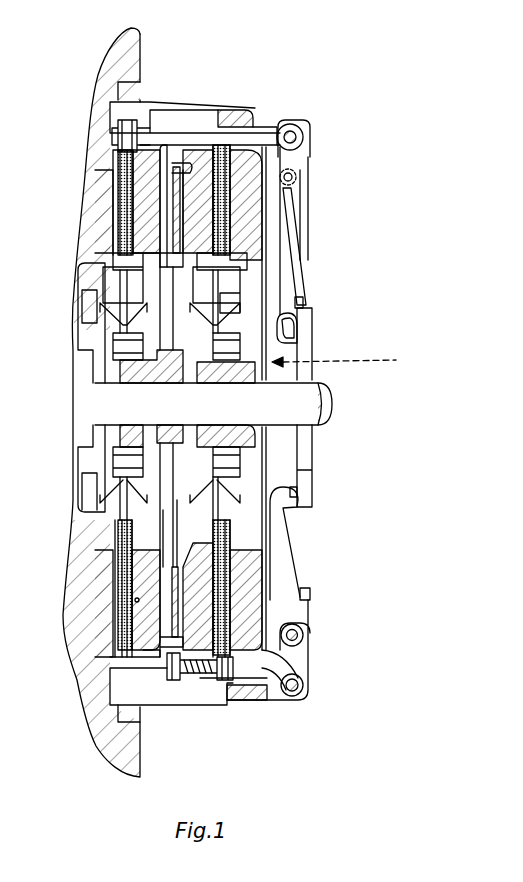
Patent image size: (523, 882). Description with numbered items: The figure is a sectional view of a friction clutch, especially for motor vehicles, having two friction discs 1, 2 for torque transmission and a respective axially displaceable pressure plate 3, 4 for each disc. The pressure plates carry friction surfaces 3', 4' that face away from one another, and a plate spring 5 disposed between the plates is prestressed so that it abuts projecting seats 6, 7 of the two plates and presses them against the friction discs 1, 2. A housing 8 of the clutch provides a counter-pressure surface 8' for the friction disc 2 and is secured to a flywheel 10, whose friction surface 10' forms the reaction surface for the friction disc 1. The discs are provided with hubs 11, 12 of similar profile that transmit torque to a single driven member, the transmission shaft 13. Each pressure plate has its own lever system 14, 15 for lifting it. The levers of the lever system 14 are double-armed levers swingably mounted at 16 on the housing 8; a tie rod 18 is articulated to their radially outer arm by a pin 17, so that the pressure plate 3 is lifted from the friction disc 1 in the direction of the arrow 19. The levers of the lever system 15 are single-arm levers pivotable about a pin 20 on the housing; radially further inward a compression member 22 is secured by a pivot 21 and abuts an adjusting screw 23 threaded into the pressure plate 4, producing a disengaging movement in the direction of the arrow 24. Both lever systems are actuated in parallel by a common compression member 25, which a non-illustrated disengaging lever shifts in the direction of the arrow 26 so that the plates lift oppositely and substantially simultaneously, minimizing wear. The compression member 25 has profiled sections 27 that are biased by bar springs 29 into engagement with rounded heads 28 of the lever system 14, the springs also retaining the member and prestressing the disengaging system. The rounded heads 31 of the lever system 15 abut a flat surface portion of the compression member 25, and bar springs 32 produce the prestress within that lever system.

The friction disc 1 is at (118, 196).
The friction disc 2 is at (230, 583).
The pressure plate 3 is at (112, 598).
The friction surface 3' is at (101, 600).
The pressure plate 4 is at (87, 588).
The friction surface 4' is at (213, 635).
The plate spring 5 is at (178, 170).
The projecting seat 6 is at (170, 173).
The projecting seat 7 is at (178, 237).
The housing 8 is at (233, 725).
The counter-pressure surface 8' is at (255, 171).
The flywheel 10 is at (101, 395).
The friction surface 10' is at (77, 211).
The hub 11 is at (140, 370).
The hub 12 is at (263, 440).
The transmission shaft 13 is at (100, 408).
The lever system 14 is at (303, 241).
The lever system 15 is at (282, 537).
The swingable mounting 16 is at (297, 178).
The pin 17 is at (297, 135).
The tie rod 18 is at (130, 128).
The arrow 19 is at (150, 108).
The pin 20 is at (304, 687).
The pivot 21 is at (304, 636).
The compression member 22 is at (273, 672).
The adjusting screw 23 is at (190, 675).
The arrow 24 is at (200, 692).
The compression member 25 is at (307, 462).
The arrow 26 is at (348, 365).
The profiled section 27 is at (295, 337).
The rounded head 28 is at (290, 320).
The bar spring 29 is at (306, 296).
The rounded head 31 is at (297, 492).
The bar spring 32 is at (308, 593).